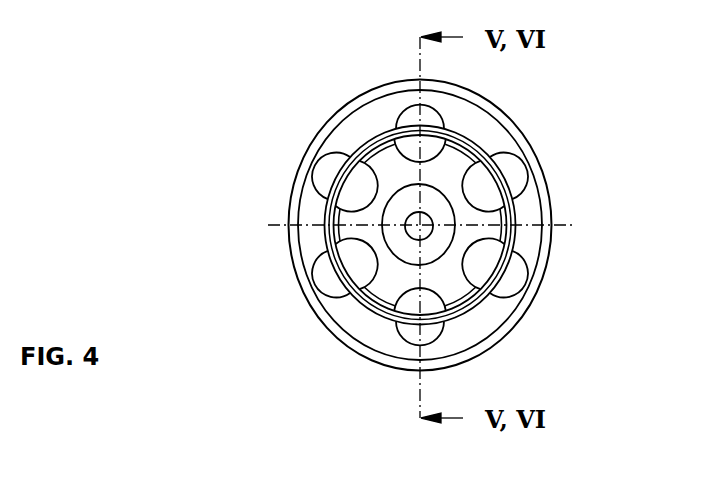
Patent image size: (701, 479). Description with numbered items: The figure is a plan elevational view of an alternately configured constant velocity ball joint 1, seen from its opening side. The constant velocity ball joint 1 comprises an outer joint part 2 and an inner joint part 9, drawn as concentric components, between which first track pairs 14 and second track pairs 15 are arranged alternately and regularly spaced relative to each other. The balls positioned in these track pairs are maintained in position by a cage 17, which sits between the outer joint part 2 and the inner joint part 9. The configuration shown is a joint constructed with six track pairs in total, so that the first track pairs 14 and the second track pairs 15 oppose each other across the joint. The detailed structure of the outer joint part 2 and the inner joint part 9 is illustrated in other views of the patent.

The constant velocity ball joint 1 is at (597, 46).
The outer joint part 2 is at (360, 125).
The inner joint part 9 is at (355, 236).
The first track pairs 14 is at (443, 107).
The second track pairs 15 is at (447, 337).
The cage 17 is at (342, 170).